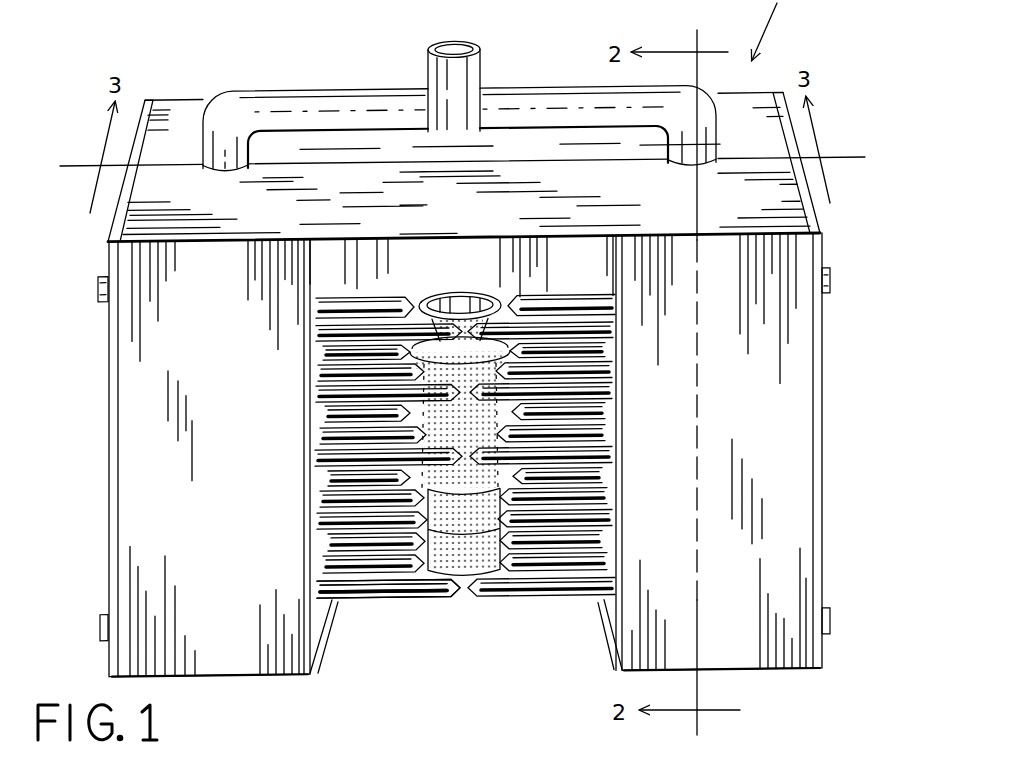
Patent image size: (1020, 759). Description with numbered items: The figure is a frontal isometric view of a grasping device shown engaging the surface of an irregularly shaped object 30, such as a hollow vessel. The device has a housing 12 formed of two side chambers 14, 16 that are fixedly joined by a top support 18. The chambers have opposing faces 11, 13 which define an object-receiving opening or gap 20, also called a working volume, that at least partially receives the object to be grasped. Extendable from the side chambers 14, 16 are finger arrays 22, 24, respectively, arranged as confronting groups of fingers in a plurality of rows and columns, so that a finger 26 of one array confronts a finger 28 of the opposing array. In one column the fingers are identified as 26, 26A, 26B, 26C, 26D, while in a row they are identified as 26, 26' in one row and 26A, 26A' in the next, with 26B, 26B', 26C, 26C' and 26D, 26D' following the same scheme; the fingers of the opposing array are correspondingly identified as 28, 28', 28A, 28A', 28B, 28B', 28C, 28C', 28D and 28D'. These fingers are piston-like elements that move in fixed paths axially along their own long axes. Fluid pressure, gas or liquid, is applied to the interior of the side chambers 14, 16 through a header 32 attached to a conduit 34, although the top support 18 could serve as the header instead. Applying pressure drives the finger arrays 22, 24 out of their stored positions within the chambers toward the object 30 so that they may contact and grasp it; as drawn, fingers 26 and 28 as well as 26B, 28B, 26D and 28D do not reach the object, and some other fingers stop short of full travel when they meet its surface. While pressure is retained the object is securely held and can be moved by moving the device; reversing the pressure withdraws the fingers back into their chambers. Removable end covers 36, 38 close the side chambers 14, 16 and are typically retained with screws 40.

The opposing face 11 is at (610, 623).
The housing 12 is at (103, 310).
The opposing face 13 is at (318, 627).
The side chamber 14 is at (244, 678).
The side chamber 16 is at (760, 660).
The top support 18 is at (478, 220).
The object-receiving opening 20 is at (359, 615).
The finger array 22 is at (386, 605).
The finger array 24 is at (516, 604).
The finger 26 is at (338, 583).
The finger 26' is at (321, 552).
The finger 26A is at (320, 527).
The finger 26A' is at (313, 483).
The finger 26B is at (332, 445).
The finger 26B' is at (312, 416).
The finger 26C is at (330, 375).
The finger 26C' is at (323, 347).
The finger 26D is at (342, 312).
The finger 26D' is at (357, 278).
The finger 28 is at (576, 576).
The finger 28' is at (616, 554).
The finger 28A is at (593, 526).
The finger 28A' is at (623, 482).
The finger 28B is at (606, 444).
The finger 28B' is at (633, 417).
The finger 28C is at (583, 371).
The finger 28C' is at (598, 337).
The finger 28D is at (579, 301).
The finger 28D' is at (601, 276).
The object 30 is at (460, 294).
The header 32 is at (300, 92).
The conduit 34 is at (420, 64).
The end cover 36 is at (108, 365).
The end cover 38 is at (823, 502).
The screw 40 is at (829, 293).